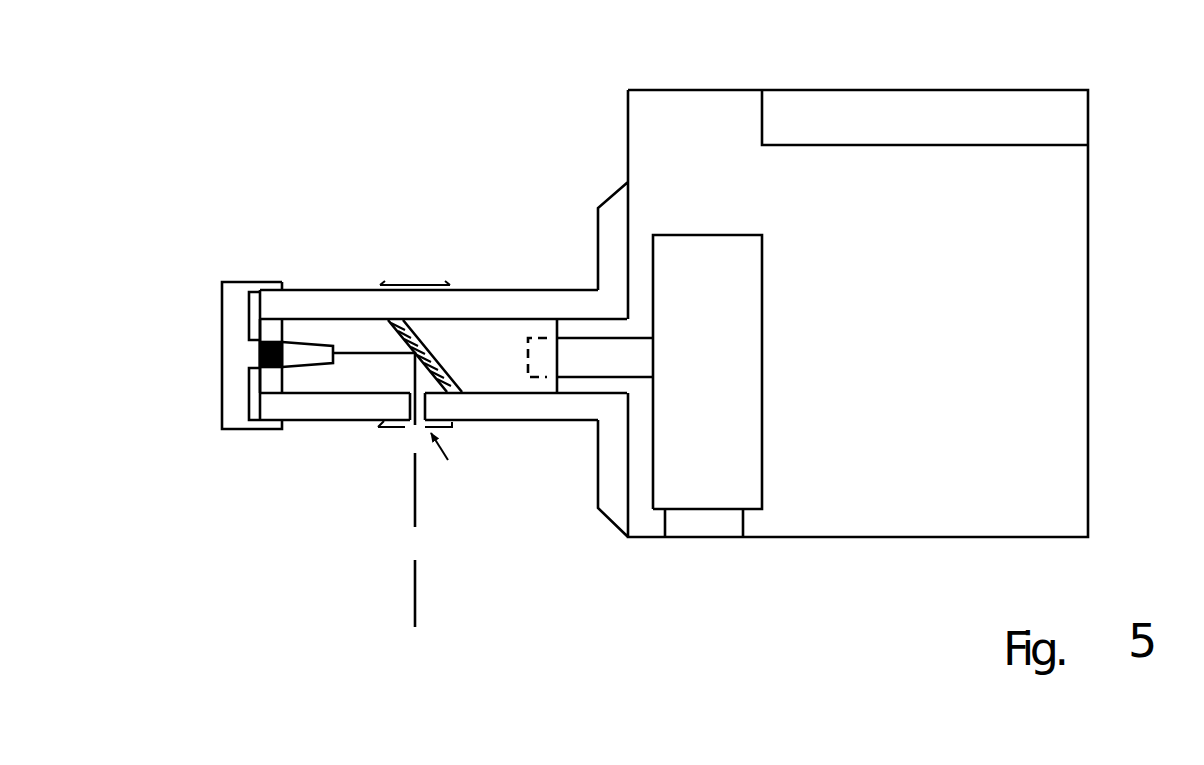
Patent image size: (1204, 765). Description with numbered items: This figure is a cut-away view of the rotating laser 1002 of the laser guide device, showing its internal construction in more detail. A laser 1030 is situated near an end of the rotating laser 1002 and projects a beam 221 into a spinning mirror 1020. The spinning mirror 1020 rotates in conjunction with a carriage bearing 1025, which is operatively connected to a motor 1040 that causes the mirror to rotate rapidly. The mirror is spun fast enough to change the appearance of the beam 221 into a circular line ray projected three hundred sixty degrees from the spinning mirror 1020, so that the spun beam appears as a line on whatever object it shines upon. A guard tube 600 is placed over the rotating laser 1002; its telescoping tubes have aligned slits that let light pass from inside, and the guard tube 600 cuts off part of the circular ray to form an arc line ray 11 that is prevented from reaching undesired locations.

The guard tube 600 is at (438, 283).
The rotating laser 1002 is at (325, 290).
The laser 1030 is at (301, 341).
The beam 221 is at (356, 357).
The carriage bearing 1025 is at (479, 316).
The spinning mirror 1020 is at (431, 373).
The motor 1040 is at (748, 518).
The line ray 11 is at (408, 583).